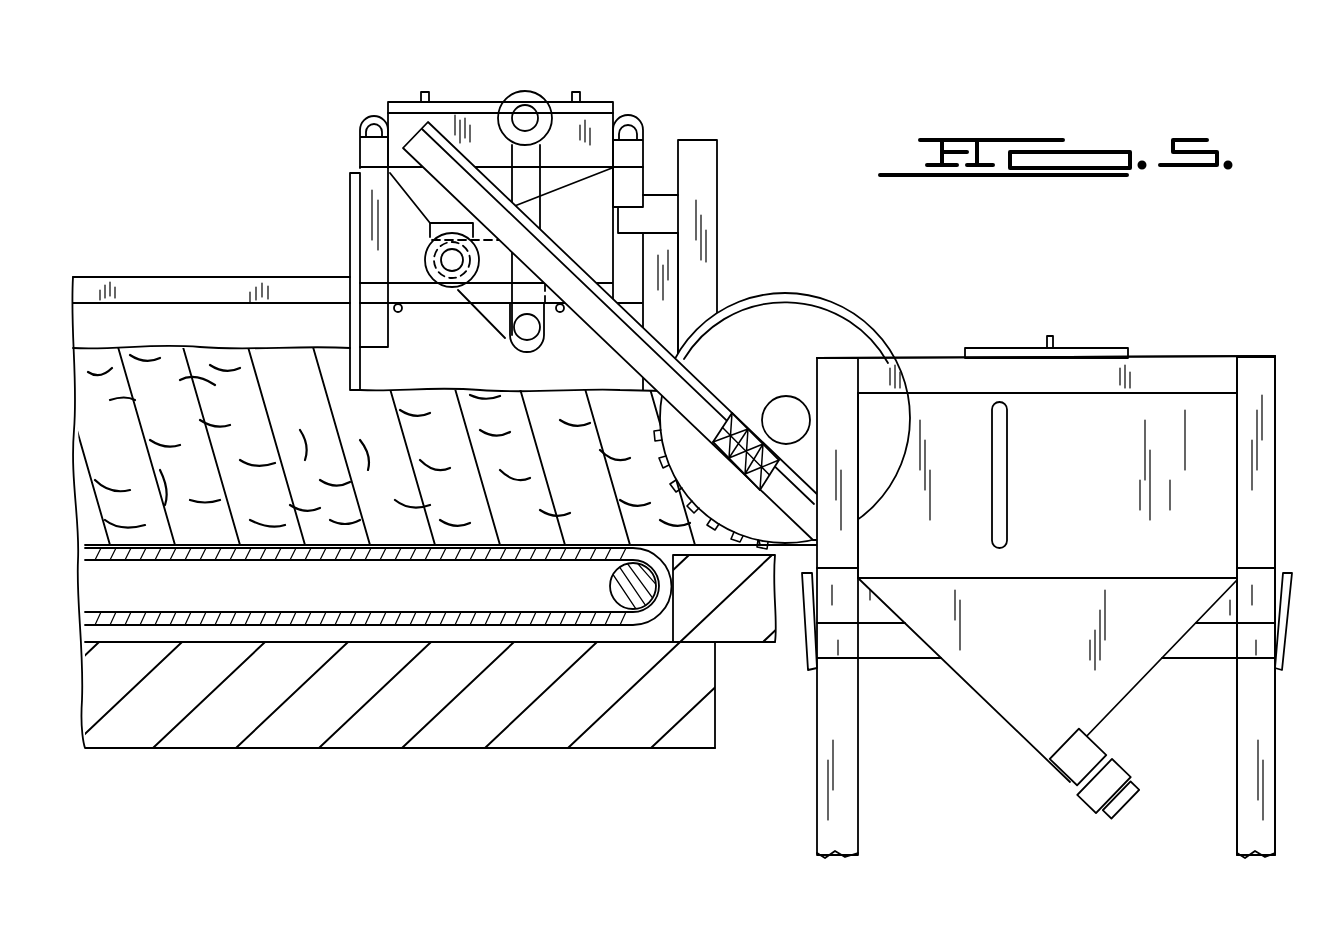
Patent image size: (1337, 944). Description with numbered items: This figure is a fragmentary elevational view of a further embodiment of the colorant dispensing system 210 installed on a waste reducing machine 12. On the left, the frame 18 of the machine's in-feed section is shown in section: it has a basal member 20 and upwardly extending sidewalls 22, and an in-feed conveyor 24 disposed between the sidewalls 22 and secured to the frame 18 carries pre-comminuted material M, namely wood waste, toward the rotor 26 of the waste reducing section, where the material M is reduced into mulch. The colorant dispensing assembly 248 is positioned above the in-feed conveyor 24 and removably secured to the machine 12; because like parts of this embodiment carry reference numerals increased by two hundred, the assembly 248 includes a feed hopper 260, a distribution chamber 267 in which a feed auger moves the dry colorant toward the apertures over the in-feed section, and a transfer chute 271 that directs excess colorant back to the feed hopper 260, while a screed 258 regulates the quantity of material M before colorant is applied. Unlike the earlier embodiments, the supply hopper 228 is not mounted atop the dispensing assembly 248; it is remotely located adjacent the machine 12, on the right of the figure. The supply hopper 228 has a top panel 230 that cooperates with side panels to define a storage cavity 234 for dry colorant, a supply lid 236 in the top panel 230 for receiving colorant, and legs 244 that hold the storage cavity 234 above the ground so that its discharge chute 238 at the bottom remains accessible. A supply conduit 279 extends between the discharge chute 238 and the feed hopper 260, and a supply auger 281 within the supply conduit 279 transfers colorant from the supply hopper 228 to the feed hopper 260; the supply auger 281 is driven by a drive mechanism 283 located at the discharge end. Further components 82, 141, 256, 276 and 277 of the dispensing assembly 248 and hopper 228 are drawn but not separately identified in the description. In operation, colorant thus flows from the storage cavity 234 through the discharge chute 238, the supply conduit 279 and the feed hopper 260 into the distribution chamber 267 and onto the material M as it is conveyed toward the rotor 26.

The waste reducing machine 12 is at (468, 772).
The frame 18 is at (70, 702).
The basal member 20 is at (656, 752).
The sidewalls 22 is at (93, 276).
The in-feed conveyor 24 is at (97, 582).
The rotor 26 is at (822, 318).
The pre-comminuted material M is at (98, 464).
The hopper wall 82 is at (1208, 431).
The slot 141 is at (1002, 457).
The colorant dispensing system 210 is at (782, 214).
The supply hopper 228 is at (1069, 558).
The top panel 230 is at (444, 101).
The storage cavity 234 is at (985, 348).
The supply lid 236 is at (1049, 338).
The discharge chute 238 is at (428, 226).
The legs 244 is at (1268, 497).
The colorant dispensing assembly 248 is at (438, 211).
The leg brace 256 is at (1283, 608).
The screed 258 is at (426, 262).
The feed hopper 260 is at (388, 124).
The distribution chamber 267 is at (428, 252).
The transfer chute 271 is at (489, 330).
The fasteners 276 is at (399, 314).
The drive pulley 277 is at (527, 104).
The supply conduit 279 is at (690, 380).
The supply auger 281 is at (743, 418).
The drive mechanism 283 is at (1082, 800).